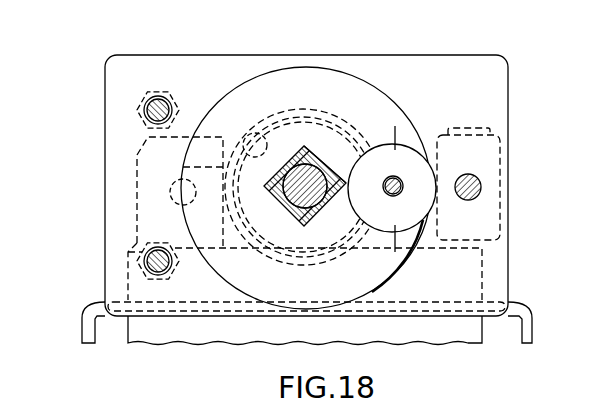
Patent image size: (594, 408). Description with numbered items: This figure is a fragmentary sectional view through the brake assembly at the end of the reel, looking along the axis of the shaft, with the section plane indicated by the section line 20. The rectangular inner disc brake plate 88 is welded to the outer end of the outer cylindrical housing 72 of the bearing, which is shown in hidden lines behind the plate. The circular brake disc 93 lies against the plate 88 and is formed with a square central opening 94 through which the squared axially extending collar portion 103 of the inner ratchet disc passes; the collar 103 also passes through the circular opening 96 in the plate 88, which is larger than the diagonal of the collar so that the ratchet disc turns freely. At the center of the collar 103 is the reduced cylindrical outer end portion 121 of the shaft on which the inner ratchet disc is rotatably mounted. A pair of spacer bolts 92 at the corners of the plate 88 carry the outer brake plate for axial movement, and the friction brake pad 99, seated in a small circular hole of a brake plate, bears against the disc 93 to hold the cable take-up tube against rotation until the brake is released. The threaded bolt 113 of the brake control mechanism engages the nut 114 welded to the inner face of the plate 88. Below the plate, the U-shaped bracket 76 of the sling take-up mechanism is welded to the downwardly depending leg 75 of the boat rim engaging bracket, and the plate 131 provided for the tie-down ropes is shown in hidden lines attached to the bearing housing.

The section line 20 is at (398, 133).
The outer cylindrical housing 72 is at (297, 268).
The downwardly depending leg 75 is at (217, 345).
The U-shaped bracket 76 is at (88, 325).
The inner disc brake plate 88 is at (467, 84).
The spacer bolts 92 is at (142, 103).
The brake disc 93 is at (251, 107).
The square central opening 94 is at (283, 153).
The circular opening 96 is at (183, 167).
The friction brake pad 99 is at (410, 213).
The squared axially extending collar portion 103 is at (305, 158).
The threaded bolt 113 is at (481, 184).
The nut 114 is at (502, 226).
The reduced cylindrical outer end portion 121 is at (310, 203).
The plate 131 is at (137, 178).